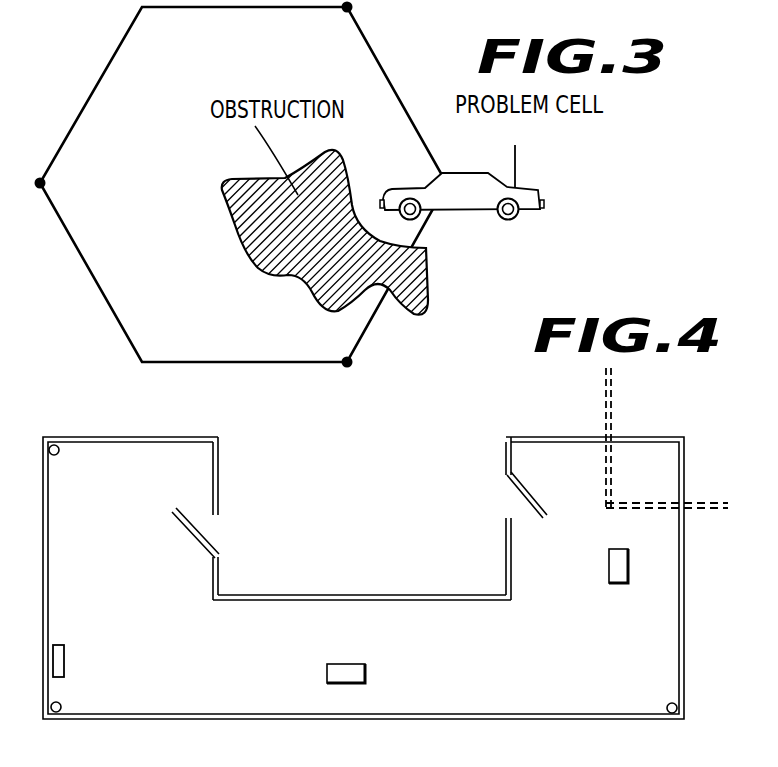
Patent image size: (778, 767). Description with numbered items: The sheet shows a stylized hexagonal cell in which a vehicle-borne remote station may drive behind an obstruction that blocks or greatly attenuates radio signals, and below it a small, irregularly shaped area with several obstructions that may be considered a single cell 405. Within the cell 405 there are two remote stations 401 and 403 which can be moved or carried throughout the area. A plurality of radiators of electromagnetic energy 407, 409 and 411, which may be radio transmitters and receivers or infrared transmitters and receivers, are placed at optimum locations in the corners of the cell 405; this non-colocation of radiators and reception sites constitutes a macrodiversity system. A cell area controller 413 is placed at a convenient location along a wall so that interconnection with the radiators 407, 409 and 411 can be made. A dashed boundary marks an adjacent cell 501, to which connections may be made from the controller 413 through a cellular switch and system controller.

The remote station 401 is at (365, 675).
The remote station 403 is at (618, 583).
The cell 405 is at (332, 617).
The radiator of electromagnetic energy 407 is at (668, 704).
The radiator of electromagnetic energy 409 is at (60, 703).
The radiator of electromagnetic energy 411 is at (58, 454).
The cell area controller 413 is at (64, 645).
The cell 501 is at (606, 411).